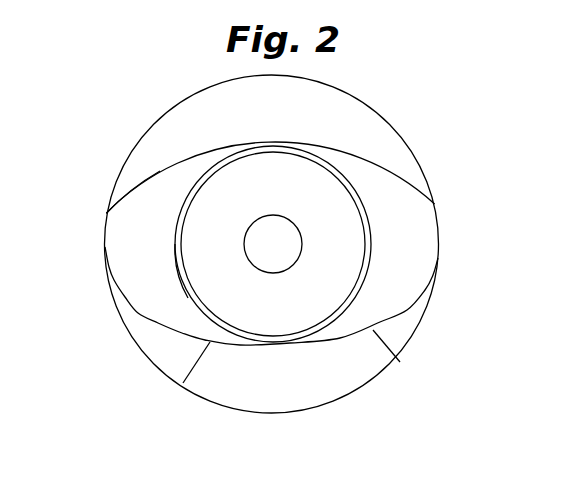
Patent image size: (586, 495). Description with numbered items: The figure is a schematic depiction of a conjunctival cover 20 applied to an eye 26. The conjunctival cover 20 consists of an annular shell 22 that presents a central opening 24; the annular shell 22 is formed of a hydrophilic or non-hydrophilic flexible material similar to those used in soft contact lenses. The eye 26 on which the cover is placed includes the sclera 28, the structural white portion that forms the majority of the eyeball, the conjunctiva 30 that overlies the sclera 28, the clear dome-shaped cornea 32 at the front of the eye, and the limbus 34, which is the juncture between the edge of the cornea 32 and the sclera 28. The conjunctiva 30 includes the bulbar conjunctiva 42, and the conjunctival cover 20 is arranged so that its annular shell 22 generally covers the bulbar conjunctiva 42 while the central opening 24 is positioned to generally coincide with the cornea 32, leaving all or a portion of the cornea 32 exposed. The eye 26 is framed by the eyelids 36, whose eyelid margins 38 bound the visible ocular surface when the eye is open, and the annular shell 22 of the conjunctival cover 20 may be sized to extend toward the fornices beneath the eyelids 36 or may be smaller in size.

The conjunctival cover 20 is at (400, 132).
The annular shell 22 is at (332, 100).
The central opening 24 is at (347, 242).
The eye 26 is at (330, 282).
The sclera 28 is at (400, 287).
The conjunctiva 30 is at (140, 292).
The cornea 32 is at (227, 297).
The limbus 34 is at (172, 262).
The eyelids 36 is at (400, 362).
The eyelid margins 38 is at (183, 383).
The bulbar conjunctiva 42 is at (133, 223).